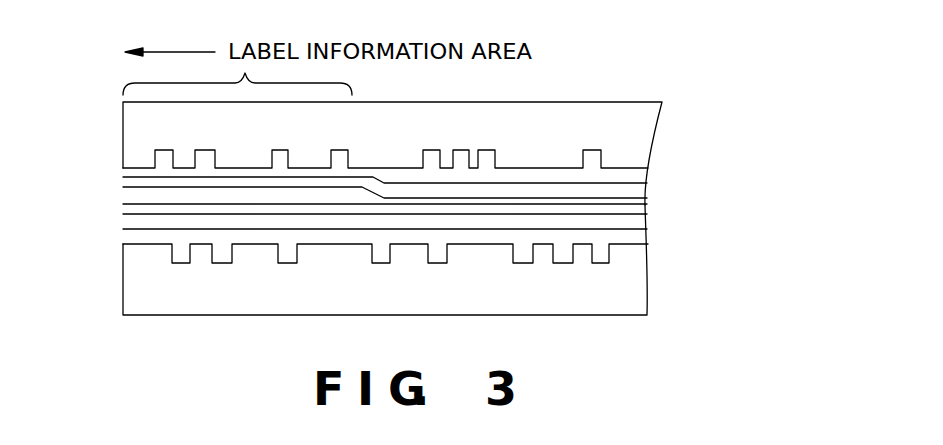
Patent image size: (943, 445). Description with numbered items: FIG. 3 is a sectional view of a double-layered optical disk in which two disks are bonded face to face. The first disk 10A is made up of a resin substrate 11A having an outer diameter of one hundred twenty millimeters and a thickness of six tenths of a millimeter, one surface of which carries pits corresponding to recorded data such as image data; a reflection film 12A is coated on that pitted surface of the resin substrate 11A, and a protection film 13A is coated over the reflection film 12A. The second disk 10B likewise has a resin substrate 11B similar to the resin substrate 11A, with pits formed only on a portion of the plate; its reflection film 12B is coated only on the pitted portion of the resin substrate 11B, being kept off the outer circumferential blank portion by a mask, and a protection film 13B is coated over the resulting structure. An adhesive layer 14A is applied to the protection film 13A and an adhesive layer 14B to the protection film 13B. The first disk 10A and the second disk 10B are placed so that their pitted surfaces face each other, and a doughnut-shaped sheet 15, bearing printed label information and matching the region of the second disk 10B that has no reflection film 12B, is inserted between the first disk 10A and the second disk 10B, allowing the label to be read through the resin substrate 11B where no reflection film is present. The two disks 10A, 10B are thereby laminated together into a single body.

The first disk 10A is at (724, 215).
The second disk 10B is at (724, 113).
The resin substrate 11A is at (130, 287).
The resin substrate 11B is at (130, 122).
The reflection film 12A is at (637, 240).
The reflection film 12B is at (632, 172).
The protection film 13A is at (636, 222).
The protection film 13B is at (633, 196).
The adhesive layer 14A is at (123, 208).
The adhesive layer 14B is at (123, 180).
The sheet 15 is at (123, 198).